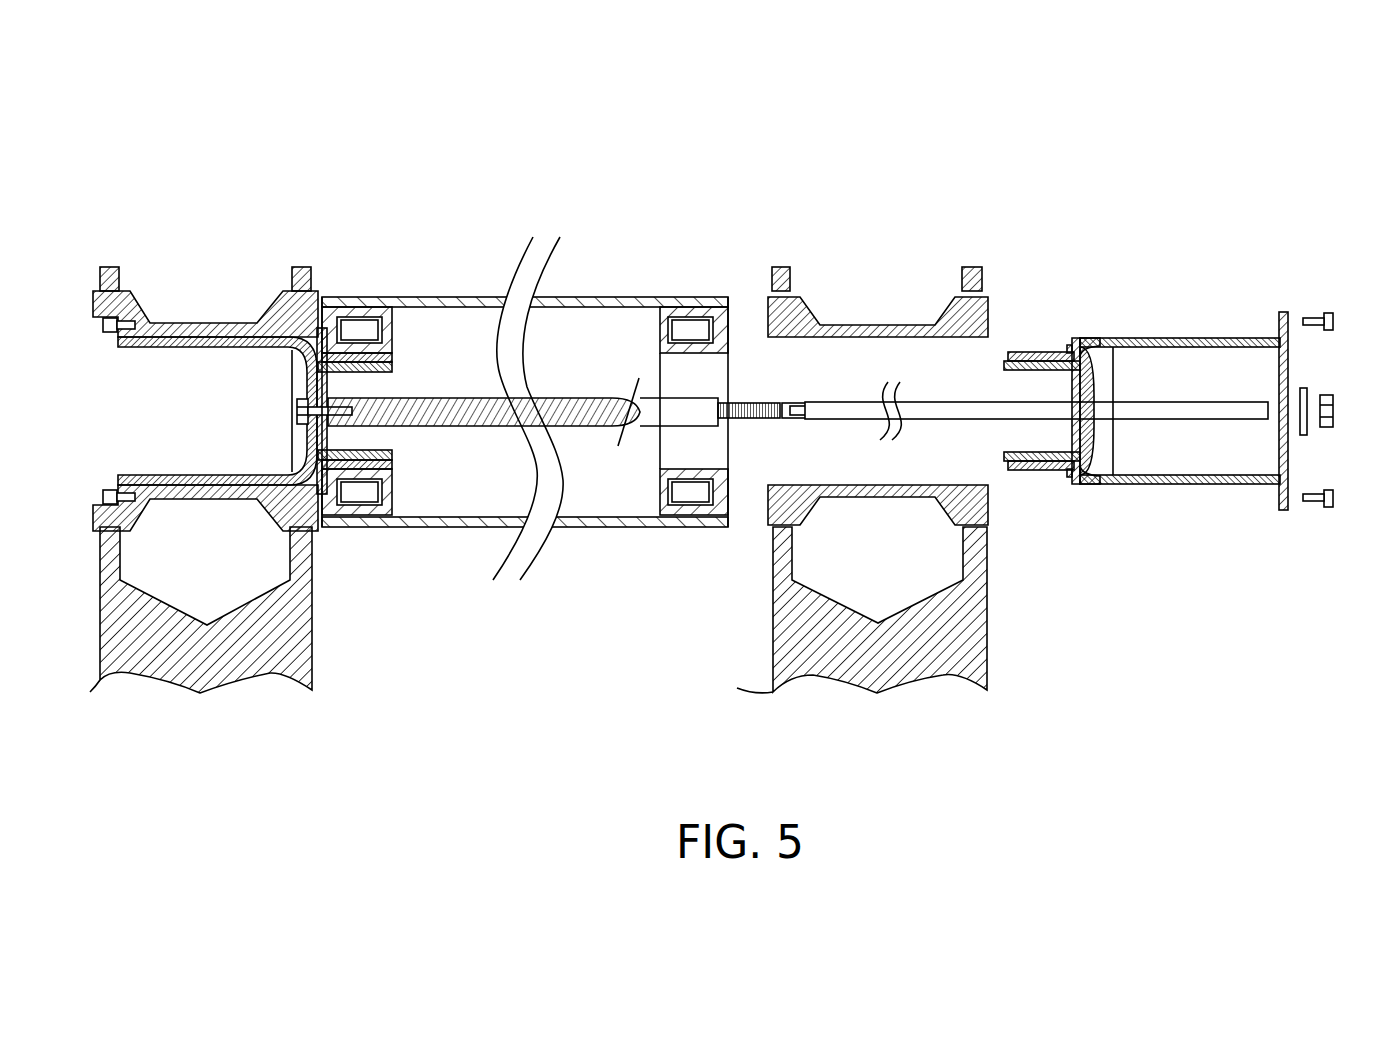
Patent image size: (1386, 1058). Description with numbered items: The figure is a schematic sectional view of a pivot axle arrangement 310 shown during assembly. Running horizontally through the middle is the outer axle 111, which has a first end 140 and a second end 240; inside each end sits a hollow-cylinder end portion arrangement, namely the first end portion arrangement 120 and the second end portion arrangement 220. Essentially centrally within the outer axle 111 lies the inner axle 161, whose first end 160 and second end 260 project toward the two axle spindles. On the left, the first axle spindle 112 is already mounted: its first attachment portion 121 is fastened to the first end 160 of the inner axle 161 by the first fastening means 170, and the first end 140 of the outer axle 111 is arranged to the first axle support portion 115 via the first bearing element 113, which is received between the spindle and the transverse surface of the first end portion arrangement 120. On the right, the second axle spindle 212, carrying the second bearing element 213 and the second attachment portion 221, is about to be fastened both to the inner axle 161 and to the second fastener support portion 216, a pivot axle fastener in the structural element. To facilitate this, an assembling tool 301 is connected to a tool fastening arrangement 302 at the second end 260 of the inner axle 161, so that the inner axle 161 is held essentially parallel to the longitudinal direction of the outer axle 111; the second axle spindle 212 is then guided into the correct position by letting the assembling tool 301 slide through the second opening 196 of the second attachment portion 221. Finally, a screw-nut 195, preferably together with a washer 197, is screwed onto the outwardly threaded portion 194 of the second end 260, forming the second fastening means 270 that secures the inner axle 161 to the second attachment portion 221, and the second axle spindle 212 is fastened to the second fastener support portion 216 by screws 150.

The pivot axle arrangement 310 is at (345, 123).
The first fastening means 170 is at (273, 394).
The first attachment portion 121 is at (297, 412).
The first axle spindle 112 is at (305, 365).
The first end portion arrangement 120 is at (353, 323).
The first axle support portion 115 is at (360, 355).
The outer axle 111 is at (595, 297).
The second end portion arrangement 220 is at (688, 323).
The second end of the inner axle 260 is at (683, 413).
The tool fastening arrangement 302 is at (793, 405).
The second opening 196 is at (1055, 403).
The second axle spindle 212 is at (1085, 345).
The washer 197 is at (1287, 387).
The screw-nut 195 is at (1320, 395).
The screws 150 is at (1308, 314).
The first bearing element 113 is at (352, 482).
The first end of the inner axle 160 is at (397, 430).
The inner axle 161 is at (620, 432).
The outwardly threaded portion 194 is at (748, 420).
The second bearing element 213 is at (1040, 472).
The second attachment portion 221 is at (1097, 478).
The assembling tool 301 is at (1203, 412).
The second fastening means 270 is at (1337, 458).
The second fastener support portion 216 is at (880, 650).
The first end of the outer axle 140 is at (441, 345).
The second end of the outer axle 240 is at (643, 345).